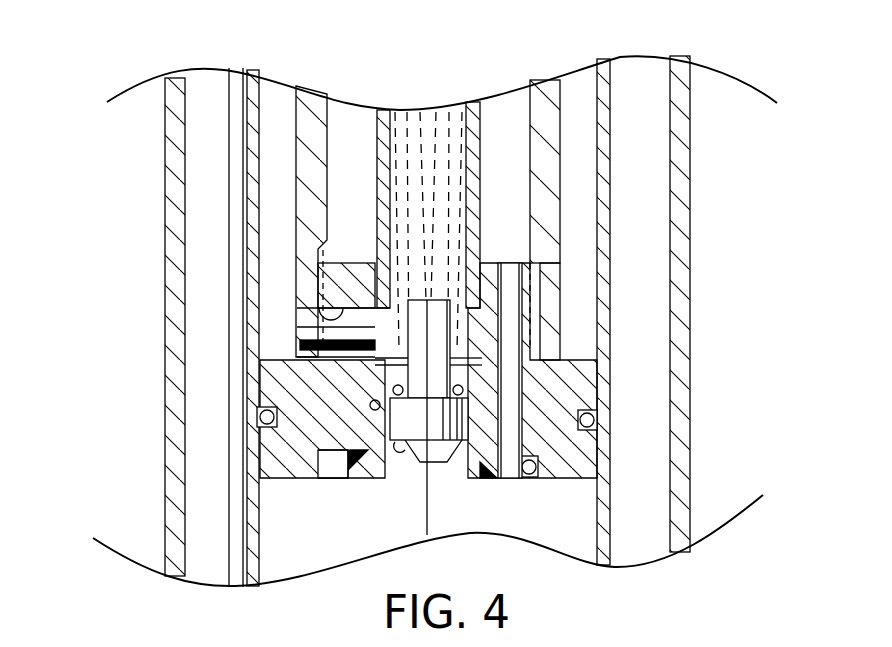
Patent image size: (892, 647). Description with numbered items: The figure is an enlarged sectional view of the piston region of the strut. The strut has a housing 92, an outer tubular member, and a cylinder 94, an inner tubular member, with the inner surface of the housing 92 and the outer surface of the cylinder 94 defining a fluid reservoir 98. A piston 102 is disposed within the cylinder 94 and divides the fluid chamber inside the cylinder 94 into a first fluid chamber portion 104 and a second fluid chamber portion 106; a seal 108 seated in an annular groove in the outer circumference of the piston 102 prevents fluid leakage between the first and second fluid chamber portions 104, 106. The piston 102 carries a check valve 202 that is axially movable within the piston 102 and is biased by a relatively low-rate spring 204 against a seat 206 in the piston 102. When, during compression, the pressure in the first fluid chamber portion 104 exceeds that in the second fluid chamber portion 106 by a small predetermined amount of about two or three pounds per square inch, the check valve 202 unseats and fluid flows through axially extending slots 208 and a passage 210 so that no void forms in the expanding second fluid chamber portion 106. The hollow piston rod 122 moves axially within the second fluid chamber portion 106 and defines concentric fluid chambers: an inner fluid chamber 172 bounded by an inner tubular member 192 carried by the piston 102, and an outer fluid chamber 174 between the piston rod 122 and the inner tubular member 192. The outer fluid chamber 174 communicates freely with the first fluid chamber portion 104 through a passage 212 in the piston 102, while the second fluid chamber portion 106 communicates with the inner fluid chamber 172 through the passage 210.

The housing 92 is at (680, 340).
The cylinder 94 is at (603, 298).
The fluid reservoir 98 is at (632, 256).
The piston 102 is at (568, 459).
The first fluid chamber portion 104 is at (536, 536).
The second fluid chamber portion 106 is at (568, 244).
The seal 108 is at (596, 418).
The piston rod 122 is at (545, 100).
The inner fluid chamber 172 is at (435, 201).
The outer fluid chamber 174 is at (493, 213).
The inner tubular member 192 is at (383, 125).
The check valve 202 is at (398, 423).
The spring 204 is at (396, 387).
The seat 206 is at (401, 448).
The axially extending slots 208 is at (370, 403).
The passage 210 is at (320, 312).
The passage 212 is at (500, 480).